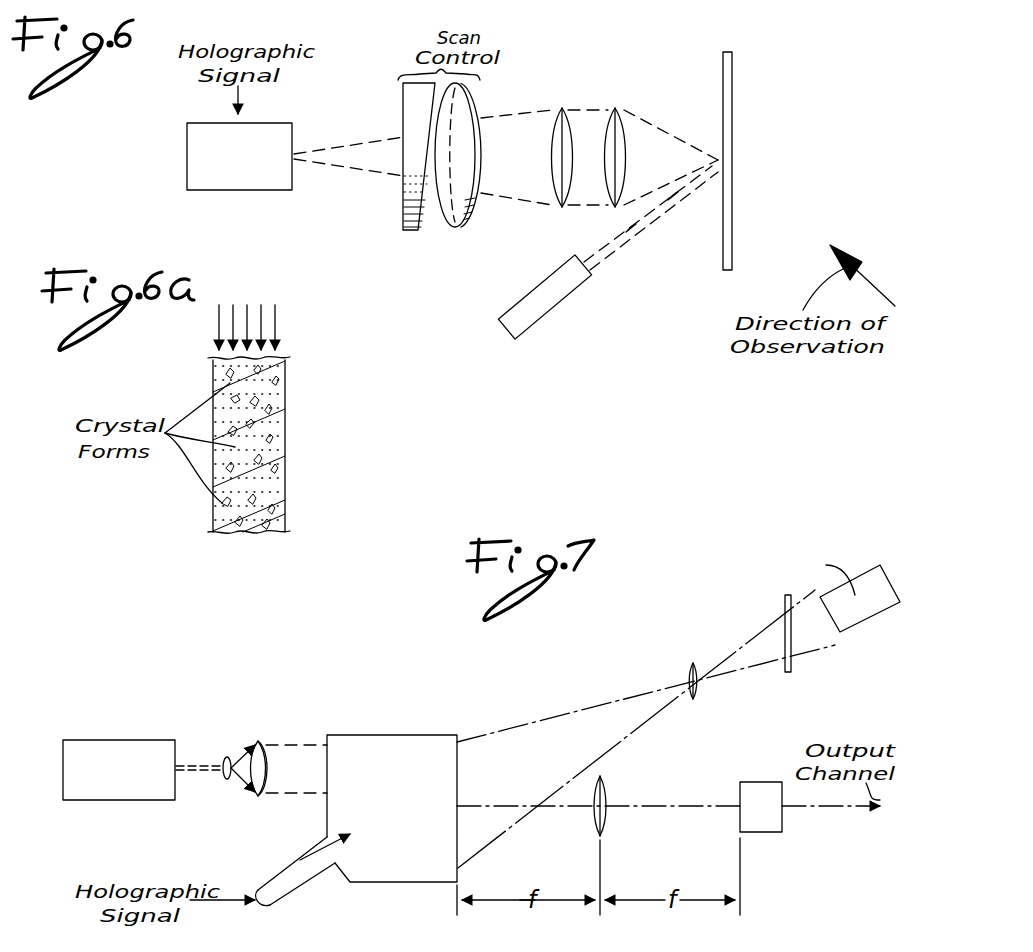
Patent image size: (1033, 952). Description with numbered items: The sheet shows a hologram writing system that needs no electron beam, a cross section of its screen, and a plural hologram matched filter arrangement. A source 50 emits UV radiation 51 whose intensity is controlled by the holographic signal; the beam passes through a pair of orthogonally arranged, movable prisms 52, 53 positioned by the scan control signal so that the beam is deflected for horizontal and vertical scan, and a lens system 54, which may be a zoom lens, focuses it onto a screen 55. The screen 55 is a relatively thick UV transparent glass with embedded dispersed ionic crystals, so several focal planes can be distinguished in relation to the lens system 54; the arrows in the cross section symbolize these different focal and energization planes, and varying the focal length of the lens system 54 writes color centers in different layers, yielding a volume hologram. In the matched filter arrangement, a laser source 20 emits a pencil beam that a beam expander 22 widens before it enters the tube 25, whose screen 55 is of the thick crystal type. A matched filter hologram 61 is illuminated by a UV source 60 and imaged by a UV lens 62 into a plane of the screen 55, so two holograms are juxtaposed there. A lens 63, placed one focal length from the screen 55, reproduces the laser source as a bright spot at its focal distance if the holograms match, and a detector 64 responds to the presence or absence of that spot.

In FIG. 6, the source 20 is at (552, 310).
In FIG. 7, the source 20 is at (128, 740).
In FIG. 7, the beam expander 22 is at (243, 738).
In FIG. 7, the tube 25 is at (388, 748).
In FIG. 6, the source of UV radiation 50 is at (272, 182).
In FIG. 6, the UV radiation beam 51 is at (362, 140).
In FIG. 6, the prism 52 is at (408, 232).
In FIG. 6, the prism 53 is at (462, 228).
In FIG. 6, the lens system 54 is at (602, 90).
In FIG. 6, the screen 55 is at (732, 100).
In FIG. 6A, the screen 55 is at (286, 423).
In FIG. 7, the screen 55 is at (458, 787).
In FIG. 7, the UV source 60 is at (883, 603).
In FIG. 7, the matched filter hologram 61 is at (787, 673).
In FIG. 7, the UV lens 62 is at (695, 699).
In FIG. 7, the lens 63 is at (607, 780).
In FIG. 7, the detector 64 is at (760, 815).